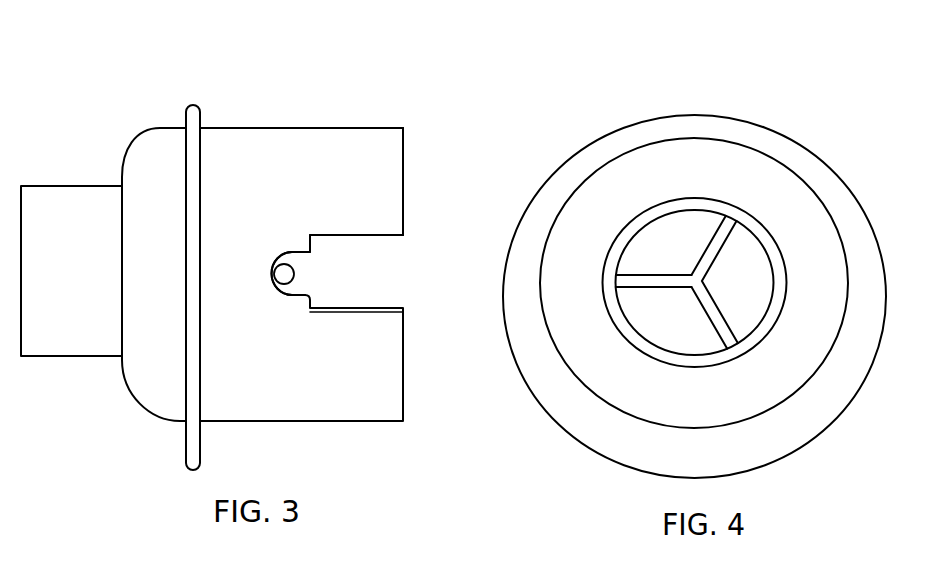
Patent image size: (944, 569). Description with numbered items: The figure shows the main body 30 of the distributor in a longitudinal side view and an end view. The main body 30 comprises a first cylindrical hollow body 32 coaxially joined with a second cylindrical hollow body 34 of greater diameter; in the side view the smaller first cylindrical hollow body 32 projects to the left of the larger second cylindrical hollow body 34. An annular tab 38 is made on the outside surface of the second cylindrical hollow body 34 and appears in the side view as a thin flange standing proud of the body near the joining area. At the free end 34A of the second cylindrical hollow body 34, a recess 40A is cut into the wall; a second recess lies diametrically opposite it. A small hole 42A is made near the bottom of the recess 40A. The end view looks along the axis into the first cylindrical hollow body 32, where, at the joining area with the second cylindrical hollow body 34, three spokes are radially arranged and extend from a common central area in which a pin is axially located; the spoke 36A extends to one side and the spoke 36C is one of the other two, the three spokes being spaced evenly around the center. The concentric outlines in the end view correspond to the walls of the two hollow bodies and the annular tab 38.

In FIG. 3, the main body 30 is at (326, 92).
In FIG. 4, the main body 30 is at (671, 102).
In FIG. 3, the first cylindrical hollow body 32 is at (62, 186).
In FIG. 3, the second cylindrical hollow body 34 is at (243, 128).
In FIG. 3, the free end 34A is at (404, 152).
In FIG. 4, the spoke 36A is at (655, 285).
In FIG. 4, the spoke 36C is at (712, 233).
In FIG. 3, the annular tab 38 is at (185, 442).
In FIG. 3, the recess 40A is at (365, 237).
In FIG. 3, the small hole 42A is at (284, 274).